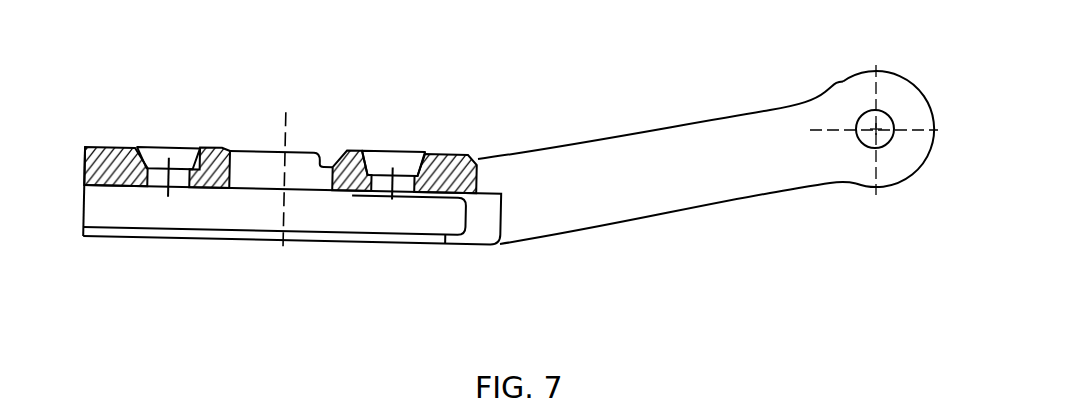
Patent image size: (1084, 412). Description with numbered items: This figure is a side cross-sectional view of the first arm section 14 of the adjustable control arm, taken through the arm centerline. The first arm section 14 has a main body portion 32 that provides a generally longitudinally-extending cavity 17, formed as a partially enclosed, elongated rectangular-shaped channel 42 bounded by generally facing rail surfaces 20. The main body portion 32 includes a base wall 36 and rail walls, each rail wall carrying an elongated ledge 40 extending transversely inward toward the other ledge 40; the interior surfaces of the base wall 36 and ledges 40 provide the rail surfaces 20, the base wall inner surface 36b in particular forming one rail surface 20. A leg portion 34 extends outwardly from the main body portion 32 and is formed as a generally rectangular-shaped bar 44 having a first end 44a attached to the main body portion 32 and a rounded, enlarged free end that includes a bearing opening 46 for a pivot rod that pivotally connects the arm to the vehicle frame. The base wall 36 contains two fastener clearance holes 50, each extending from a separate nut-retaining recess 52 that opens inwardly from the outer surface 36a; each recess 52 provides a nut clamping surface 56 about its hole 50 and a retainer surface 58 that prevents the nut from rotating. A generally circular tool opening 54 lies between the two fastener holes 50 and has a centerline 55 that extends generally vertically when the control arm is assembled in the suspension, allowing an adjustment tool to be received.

The first arm section 14 is at (420, 58).
The cavity 17 is at (257, 233).
The rail surfaces 20 is at (233, 214).
The main body portion 32 is at (225, 126).
The leg portion 34 is at (773, 210).
The base wall 36 is at (283, 189).
The outer surface 36a is at (458, 153).
The base wall inner surface 36b is at (114, 185).
The ledge 40 is at (127, 237).
The channel 42 is at (184, 210).
The bar 44 is at (721, 145).
The first end 44a is at (893, 80).
The bearing opening 46 is at (890, 111).
The fastener clearance hole 50 is at (151, 184).
The nut-retaining recess 52 is at (167, 132).
The tool opening 54 is at (317, 151).
The centerline 55 is at (285, 108).
The nut clamping surface 56 is at (372, 152).
The retainer surface 58 is at (148, 151).